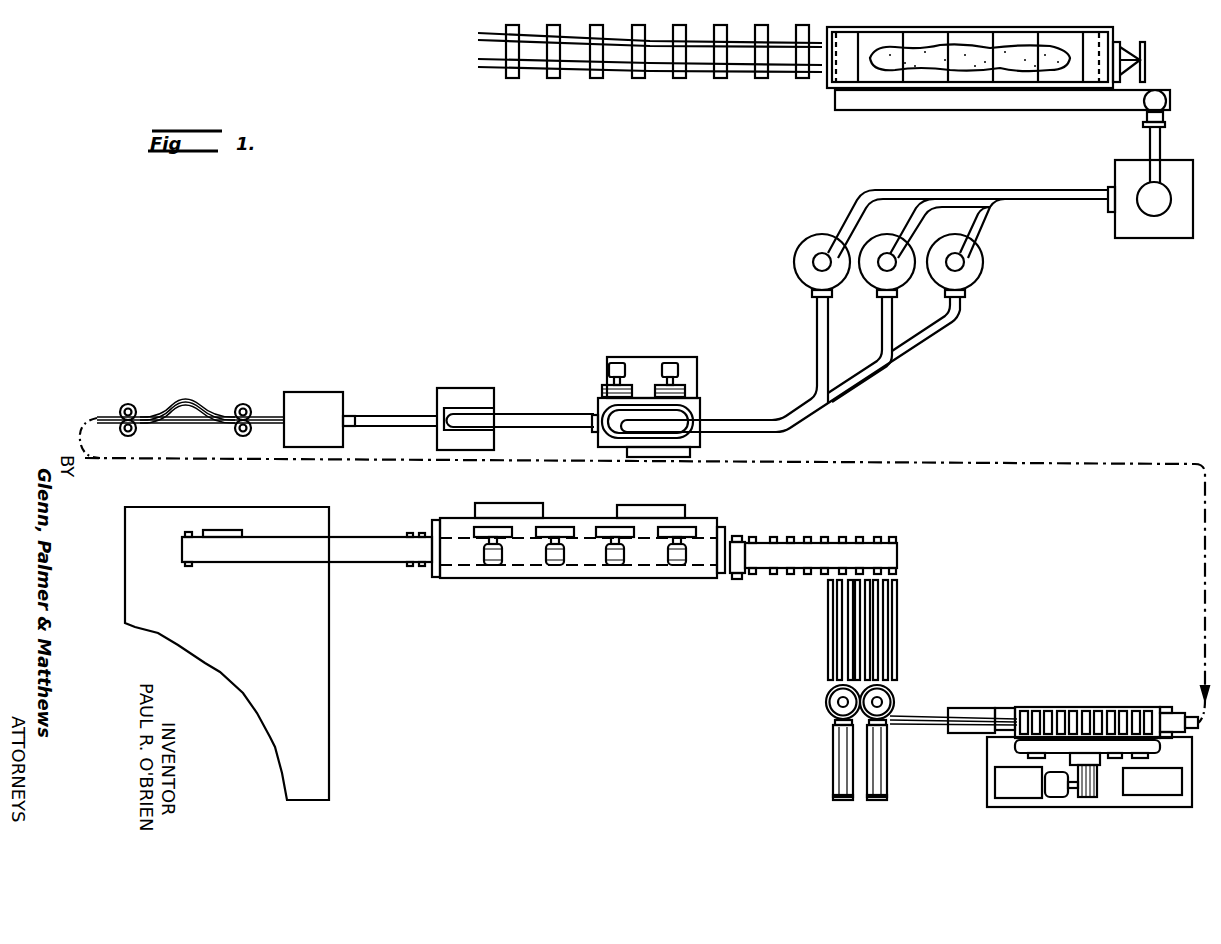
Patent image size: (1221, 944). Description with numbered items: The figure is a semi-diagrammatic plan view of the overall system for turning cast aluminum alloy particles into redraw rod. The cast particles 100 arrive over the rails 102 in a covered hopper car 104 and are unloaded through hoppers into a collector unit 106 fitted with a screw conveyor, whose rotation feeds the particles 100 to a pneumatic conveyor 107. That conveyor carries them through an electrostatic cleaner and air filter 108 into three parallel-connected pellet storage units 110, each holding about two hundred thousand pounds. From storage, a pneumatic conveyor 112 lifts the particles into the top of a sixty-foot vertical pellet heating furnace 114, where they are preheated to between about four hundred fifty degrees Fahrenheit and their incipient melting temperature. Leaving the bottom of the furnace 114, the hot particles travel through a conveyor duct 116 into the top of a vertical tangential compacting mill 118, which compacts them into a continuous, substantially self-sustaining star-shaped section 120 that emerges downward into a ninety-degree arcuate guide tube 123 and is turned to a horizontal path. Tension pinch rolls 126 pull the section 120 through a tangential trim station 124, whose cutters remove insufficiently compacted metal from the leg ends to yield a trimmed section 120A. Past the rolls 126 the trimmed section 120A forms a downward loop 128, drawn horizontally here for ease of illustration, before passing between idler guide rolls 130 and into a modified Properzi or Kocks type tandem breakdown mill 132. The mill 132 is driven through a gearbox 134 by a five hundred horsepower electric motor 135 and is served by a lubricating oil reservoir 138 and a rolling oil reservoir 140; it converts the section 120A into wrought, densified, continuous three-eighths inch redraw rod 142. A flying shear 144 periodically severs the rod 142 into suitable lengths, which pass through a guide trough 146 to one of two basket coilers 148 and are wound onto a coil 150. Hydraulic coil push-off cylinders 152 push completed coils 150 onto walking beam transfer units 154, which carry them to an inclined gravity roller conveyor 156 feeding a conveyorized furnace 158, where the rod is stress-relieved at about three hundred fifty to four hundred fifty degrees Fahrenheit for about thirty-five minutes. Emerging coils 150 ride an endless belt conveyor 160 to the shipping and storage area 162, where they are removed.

The cast particles 100 is at (921, 62).
The rails 102 is at (618, 70).
The covered hopper car 104 is at (822, 82).
The collector unit 106 is at (1016, 105).
The pneumatic conveyor 107 is at (1148, 140).
The electrostatic cleaner and air filter 108 is at (1133, 232).
The pellet storage units 110 is at (807, 248).
The pneumatic conveyor 112 is at (742, 422).
The vertical pellet heating furnace 114 is at (692, 372).
The conveyor duct 116 is at (532, 416).
The vertical tangential compacting mill 118 is at (475, 397).
The star-shaped section 120 is at (351, 414).
The trimmed section 120A is at (262, 432).
The guide tube 123 is at (393, 418).
The tangential trim station 124 is at (313, 393).
The tension pinch rolls 126 is at (248, 403).
The downward loop 128 is at (203, 399).
The idler guide rolls 130 is at (134, 403).
The tandem breakdown mill 132 is at (1057, 708).
The gearbox 134 is at (1107, 745).
The electric motor 135 is at (1055, 797).
The lubricating oil reservoir 138 is at (1005, 793).
The rolling oil reservoir 140 is at (1161, 793).
The redraw rod 142 is at (1002, 712).
The flying shear 144 is at (970, 710).
The guide trough 146 is at (928, 727).
The basket coilers 148 is at (827, 694).
The coil 150 is at (838, 704).
The hydraulic coil push-off cylinders 152 is at (837, 798).
The walking beam transfer units 154 is at (893, 600).
The inclined gravity roller conveyor 156 is at (811, 550).
The furnace 158 is at (700, 518).
The endless belt conveyor 160 is at (352, 543).
The shipping and storage area 162 is at (317, 515).